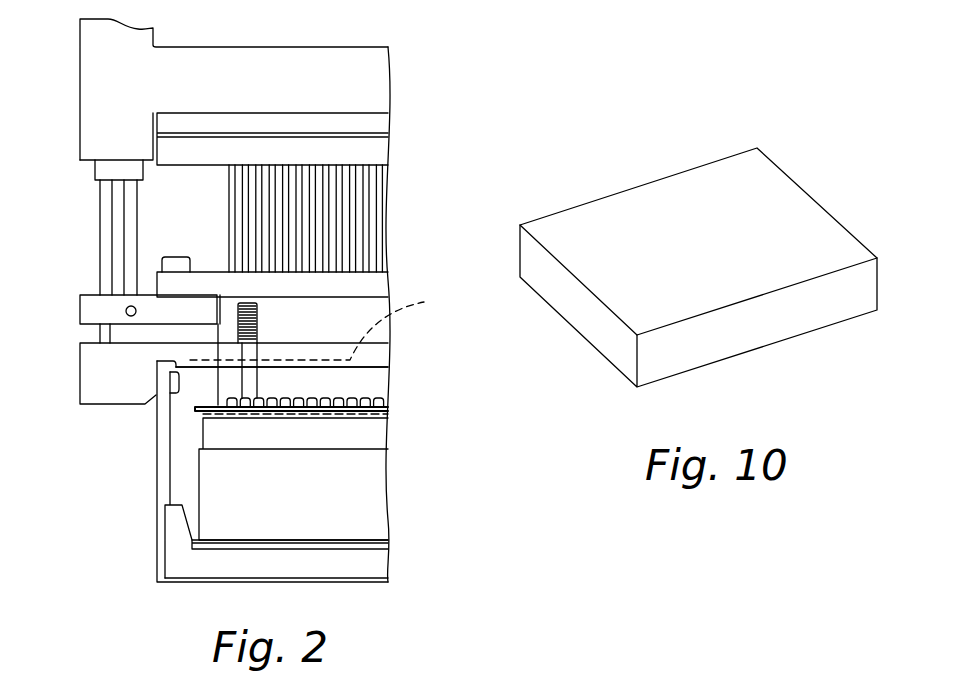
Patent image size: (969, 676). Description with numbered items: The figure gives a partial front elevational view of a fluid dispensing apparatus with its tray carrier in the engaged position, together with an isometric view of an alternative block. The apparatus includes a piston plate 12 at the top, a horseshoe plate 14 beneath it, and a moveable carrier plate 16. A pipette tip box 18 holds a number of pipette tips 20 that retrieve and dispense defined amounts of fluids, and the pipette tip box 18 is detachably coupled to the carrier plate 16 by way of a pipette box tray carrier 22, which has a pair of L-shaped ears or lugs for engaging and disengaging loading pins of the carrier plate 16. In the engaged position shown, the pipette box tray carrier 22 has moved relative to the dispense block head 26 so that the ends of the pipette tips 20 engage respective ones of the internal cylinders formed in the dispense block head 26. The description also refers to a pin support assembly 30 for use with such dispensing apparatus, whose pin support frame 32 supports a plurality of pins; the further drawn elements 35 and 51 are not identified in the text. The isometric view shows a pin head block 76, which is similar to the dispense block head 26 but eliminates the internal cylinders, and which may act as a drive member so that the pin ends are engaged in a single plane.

In FIG. 2, the piston plate 12 is at (80, 83).
In FIG. 2, the horseshoe plate 14 is at (80, 310).
In FIG. 2, the carrier plate 16 is at (80, 372).
In FIG. 2, the pipette tip box 18 is at (199, 496).
In FIG. 2, the pipette tips 20 is at (368, 398).
In FIG. 2, the pipette box tray carrier 22 is at (157, 563).
In FIG. 2, the dispense block head 26 is at (382, 377).
In FIG. 2, the pin support assembly 30 is at (195, 413).
In FIG. 2, the pin support frame 32 is at (258, 317).
In FIG. 2, the guide pins 35 is at (258, 378).
In FIG. 2, the hidden edge line 51 is at (325, 325).
In FIG. 10, the pin head block 76 is at (768, 345).